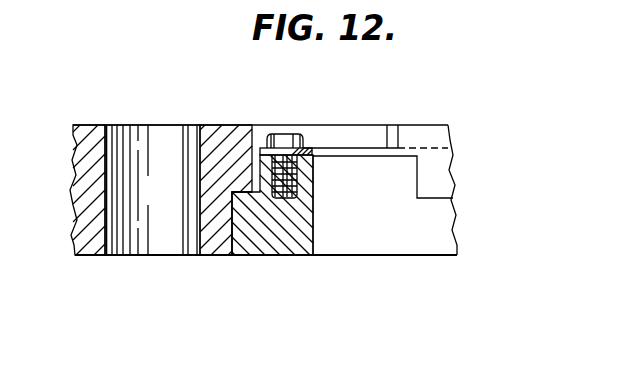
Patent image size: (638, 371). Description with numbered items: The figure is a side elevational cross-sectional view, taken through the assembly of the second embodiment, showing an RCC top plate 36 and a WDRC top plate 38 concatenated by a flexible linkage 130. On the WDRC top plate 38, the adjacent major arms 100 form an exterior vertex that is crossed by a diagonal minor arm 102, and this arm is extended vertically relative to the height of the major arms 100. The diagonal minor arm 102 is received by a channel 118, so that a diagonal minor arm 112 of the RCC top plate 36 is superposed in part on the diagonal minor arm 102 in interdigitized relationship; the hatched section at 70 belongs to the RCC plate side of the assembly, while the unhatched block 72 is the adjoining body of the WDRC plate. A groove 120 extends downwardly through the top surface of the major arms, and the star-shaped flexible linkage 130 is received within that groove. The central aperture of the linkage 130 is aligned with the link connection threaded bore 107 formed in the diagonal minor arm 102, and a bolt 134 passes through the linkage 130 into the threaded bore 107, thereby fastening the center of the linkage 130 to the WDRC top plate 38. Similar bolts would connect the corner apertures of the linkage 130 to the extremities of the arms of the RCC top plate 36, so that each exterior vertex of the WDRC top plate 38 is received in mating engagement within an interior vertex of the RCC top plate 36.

The RCC top plate 36 is at (218, 112).
The spline section 70 is at (178, 202).
The diagonal minor arm 112 is at (235, 131).
The channel 118 is at (233, 247).
The diagonal minor arm 102 is at (276, 245).
The bolt 134 is at (291, 133).
The link connection threaded bore 107 is at (298, 180).
The flexible linkage 130 is at (343, 140).
The groove 120 is at (397, 137).
The housing block 72 is at (390, 228).
The major arm 100 is at (448, 232).
The WDRC top plate 38 is at (404, 268).